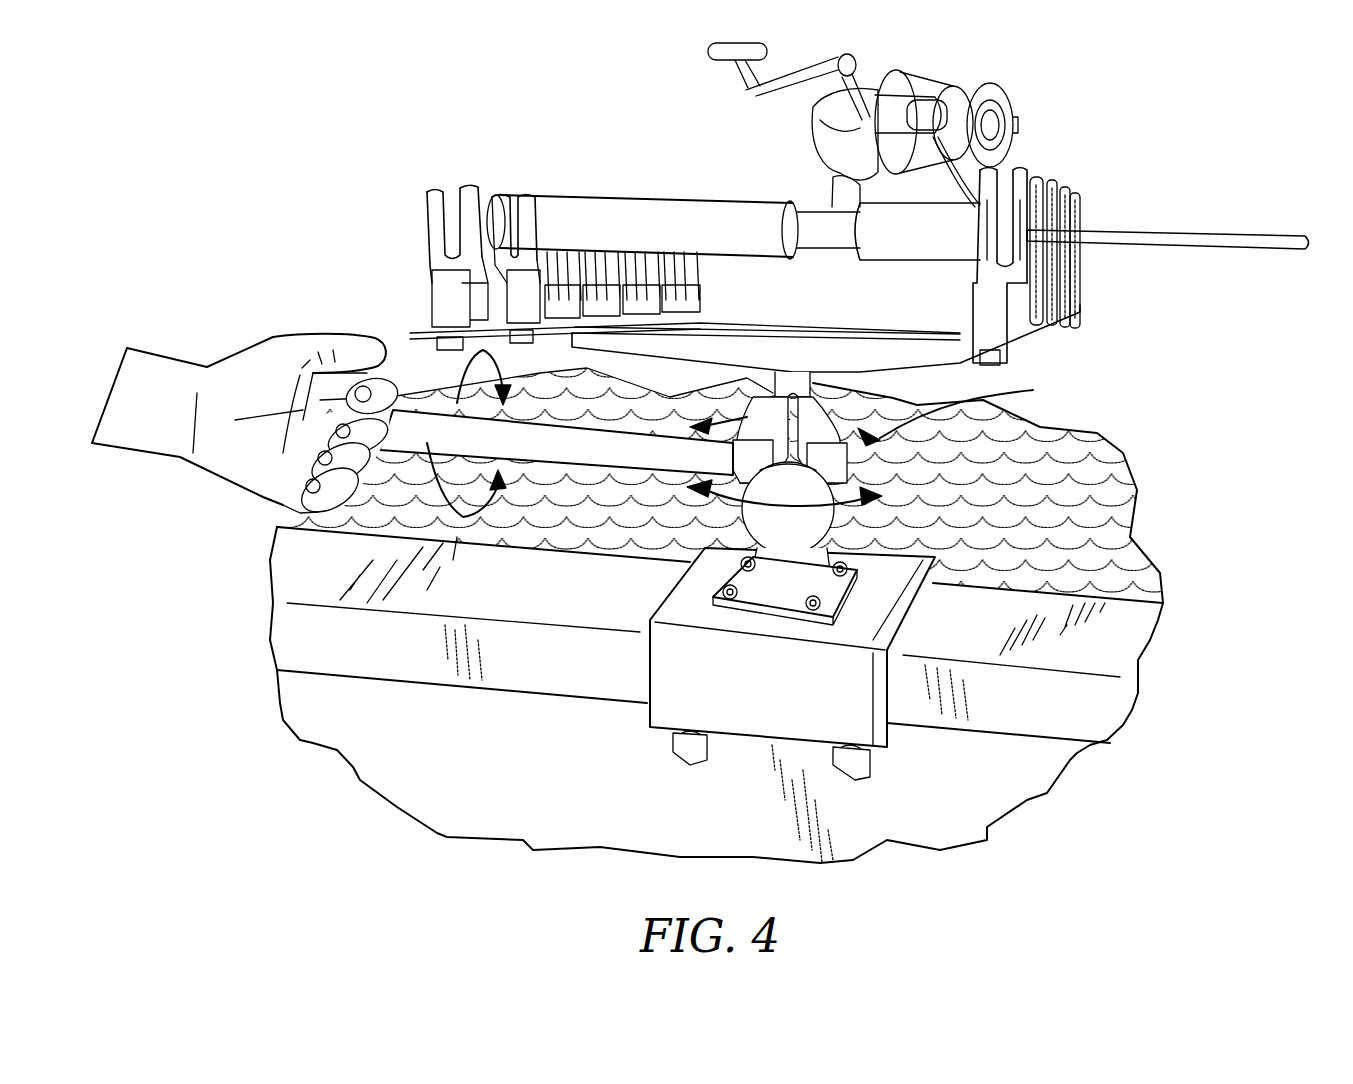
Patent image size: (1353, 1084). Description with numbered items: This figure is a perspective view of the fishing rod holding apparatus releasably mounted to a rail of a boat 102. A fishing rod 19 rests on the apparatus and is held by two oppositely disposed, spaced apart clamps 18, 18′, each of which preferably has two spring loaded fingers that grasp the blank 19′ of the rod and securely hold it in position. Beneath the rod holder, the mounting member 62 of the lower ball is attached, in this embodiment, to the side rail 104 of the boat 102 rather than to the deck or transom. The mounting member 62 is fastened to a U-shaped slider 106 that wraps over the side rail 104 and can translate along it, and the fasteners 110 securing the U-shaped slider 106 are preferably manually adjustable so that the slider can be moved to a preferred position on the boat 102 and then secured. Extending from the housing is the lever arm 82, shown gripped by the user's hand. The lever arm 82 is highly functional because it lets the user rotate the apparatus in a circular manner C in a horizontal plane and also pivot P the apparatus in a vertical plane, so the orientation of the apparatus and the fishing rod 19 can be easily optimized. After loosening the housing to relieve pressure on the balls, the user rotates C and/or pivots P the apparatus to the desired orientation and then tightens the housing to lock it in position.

The clamp 18 is at (468, 183).
The fishing rod 19 is at (693, 213).
The clamp 18′ is at (995, 182).
The blank of a fishing rod 19′ is at (1258, 240).
The lever arm 82 is at (427, 449).
The mounting member 62 is at (757, 577).
The side rail 104 is at (337, 578).
The U-shaped slider 106 is at (753, 703).
The fasteners 110 is at (690, 753).
The boat 102 is at (987, 798).
The circular rotation C is at (457, 372).
The pivot P is at (871, 437).